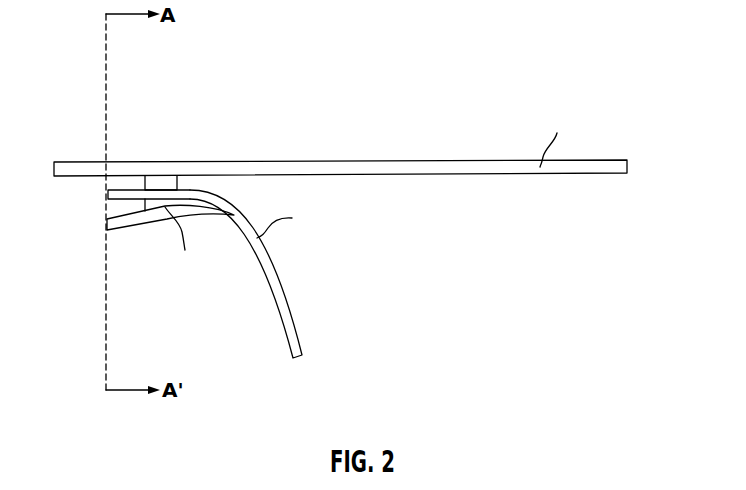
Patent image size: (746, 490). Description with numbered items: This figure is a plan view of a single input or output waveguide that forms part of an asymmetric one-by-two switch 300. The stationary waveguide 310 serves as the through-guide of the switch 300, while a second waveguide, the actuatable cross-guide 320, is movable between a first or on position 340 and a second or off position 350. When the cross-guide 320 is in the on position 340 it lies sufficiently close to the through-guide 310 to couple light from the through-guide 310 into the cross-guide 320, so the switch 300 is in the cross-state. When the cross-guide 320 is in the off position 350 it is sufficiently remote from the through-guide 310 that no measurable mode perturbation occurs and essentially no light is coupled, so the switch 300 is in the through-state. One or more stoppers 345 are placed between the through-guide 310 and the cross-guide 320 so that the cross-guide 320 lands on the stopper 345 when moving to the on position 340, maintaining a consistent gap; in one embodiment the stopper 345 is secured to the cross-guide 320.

The asymmetric 1×2 switch 300 is at (327, 257).
The through-guide 310 is at (402, 167).
The cross-guide 320 is at (283, 288).
The on position 340 is at (107, 195).
The stopper 345 is at (162, 183).
The off position 350 is at (105, 225).